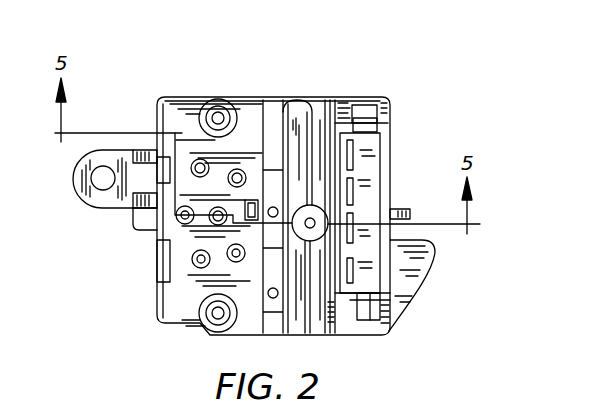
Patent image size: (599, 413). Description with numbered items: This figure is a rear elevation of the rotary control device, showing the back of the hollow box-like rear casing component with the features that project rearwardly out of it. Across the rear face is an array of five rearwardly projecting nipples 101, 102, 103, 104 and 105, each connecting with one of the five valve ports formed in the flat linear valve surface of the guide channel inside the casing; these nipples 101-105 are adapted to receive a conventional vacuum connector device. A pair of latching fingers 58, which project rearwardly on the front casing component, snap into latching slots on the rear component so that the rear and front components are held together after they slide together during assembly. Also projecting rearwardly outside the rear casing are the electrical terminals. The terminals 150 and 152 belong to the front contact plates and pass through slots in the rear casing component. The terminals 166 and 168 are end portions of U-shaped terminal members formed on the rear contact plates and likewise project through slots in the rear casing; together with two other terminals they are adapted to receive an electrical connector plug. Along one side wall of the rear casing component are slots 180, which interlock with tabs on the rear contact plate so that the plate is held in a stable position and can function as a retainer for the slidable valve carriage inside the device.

The latching fingers 58 is at (366, 120).
The nipple 101 is at (157, 235).
The nipple 102 is at (200, 268).
The nipple 103 is at (197, 159).
The nipple 104 is at (236, 262).
The nipple 105 is at (239, 169).
The terminal 150 is at (367, 240).
The terminal 152 is at (352, 152).
The terminal 166 is at (353, 190).
The terminal 168 is at (355, 273).
The slots 180 is at (155, 173).